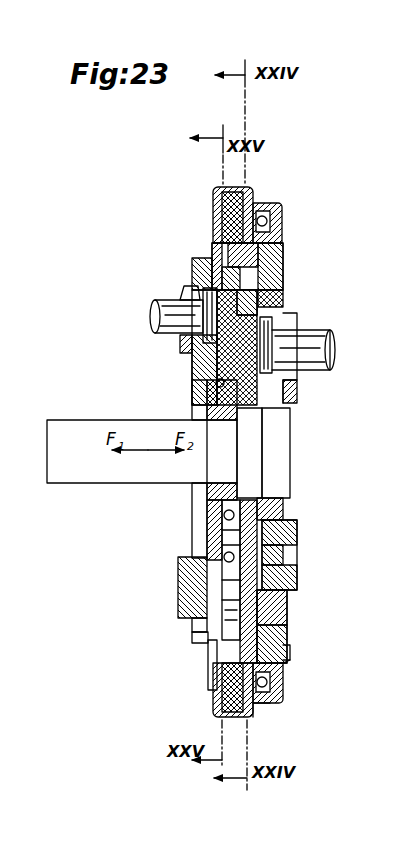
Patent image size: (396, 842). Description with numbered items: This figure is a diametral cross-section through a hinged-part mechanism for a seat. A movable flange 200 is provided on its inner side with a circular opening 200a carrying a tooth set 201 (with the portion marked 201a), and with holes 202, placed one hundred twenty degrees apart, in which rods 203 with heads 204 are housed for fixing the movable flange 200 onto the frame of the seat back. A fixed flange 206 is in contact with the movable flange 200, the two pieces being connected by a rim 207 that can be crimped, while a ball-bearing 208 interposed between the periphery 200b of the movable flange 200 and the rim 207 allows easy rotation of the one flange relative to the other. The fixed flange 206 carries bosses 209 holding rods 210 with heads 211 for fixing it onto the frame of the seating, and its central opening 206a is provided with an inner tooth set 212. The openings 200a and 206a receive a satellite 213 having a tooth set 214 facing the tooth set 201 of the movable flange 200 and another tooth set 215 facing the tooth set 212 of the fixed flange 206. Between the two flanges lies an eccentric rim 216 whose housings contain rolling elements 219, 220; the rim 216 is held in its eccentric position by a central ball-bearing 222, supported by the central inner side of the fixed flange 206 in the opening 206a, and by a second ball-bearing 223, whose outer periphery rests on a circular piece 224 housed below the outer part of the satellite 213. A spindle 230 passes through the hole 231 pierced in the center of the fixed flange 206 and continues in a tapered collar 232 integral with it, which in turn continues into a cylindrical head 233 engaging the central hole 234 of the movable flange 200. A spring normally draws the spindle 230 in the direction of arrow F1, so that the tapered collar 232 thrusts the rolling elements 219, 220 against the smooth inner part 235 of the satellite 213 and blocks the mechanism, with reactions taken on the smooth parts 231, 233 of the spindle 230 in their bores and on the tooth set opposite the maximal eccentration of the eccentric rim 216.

The rim 207 is at (222, 190).
The central opening 206a is at (262, 240).
The tooth set 215 is at (230, 260).
The satellite 213 is at (256, 262).
The tooth set 214 is at (284, 260).
The bosses 209 is at (183, 288).
The heads 211 is at (178, 298).
The rods 210 is at (164, 311).
The second ball-bearing 223 is at (181, 341).
The fixed flange 206 is at (193, 368).
The central ball-bearing 222 is at (200, 406).
The smooth inner part 235 is at (282, 306).
The rods 203 is at (279, 328).
The holes 202 is at (333, 352).
The heads 204 is at (288, 346).
The eccentric rim 216 is at (195, 533).
The spindle 230 is at (68, 421).
The hole 231 is at (223, 422).
The collar 232 is at (254, 446).
The cylindrical head 233 is at (279, 417).
The central hole 234 is at (283, 511).
The rolling element 219 is at (270, 535).
The rolling element 220 is at (324, 555).
The circular piece 224 is at (214, 601).
The inner tooth set 212 is at (226, 643).
The tooth set 201 is at (272, 604).
The sleeve portion 201a is at (322, 623).
The movable flange 200 is at (268, 642).
The circular opening 200a is at (285, 650).
The periphery 200b is at (280, 665).
The ball-bearing 208 is at (280, 688).